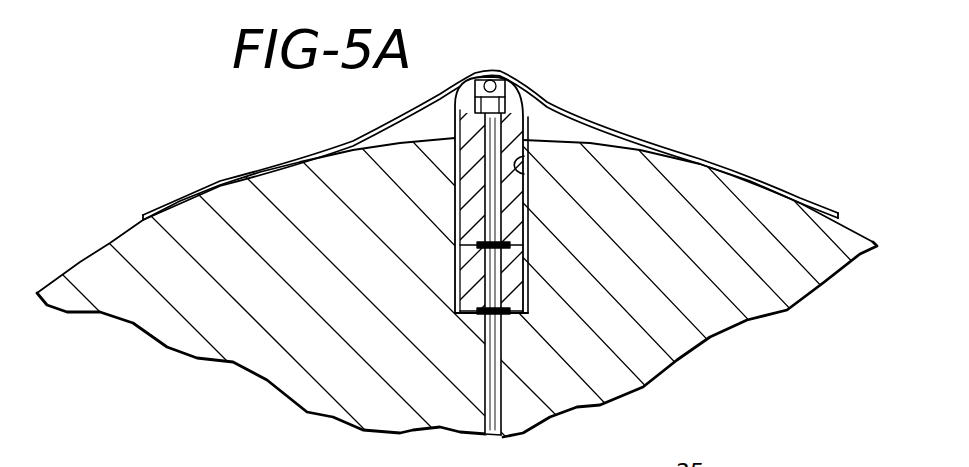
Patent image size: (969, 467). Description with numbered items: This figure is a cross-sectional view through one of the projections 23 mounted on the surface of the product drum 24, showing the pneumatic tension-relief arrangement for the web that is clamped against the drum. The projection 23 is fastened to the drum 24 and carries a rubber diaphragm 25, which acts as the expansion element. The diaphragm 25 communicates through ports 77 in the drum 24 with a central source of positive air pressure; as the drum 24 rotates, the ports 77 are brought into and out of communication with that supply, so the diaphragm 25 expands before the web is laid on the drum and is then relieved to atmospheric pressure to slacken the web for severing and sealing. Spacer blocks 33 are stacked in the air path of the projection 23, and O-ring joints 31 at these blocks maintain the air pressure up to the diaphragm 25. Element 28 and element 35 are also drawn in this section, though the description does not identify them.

The projection 23 is at (527, 119).
The product drum 24 is at (112, 240).
The rubber diaphragm 25 is at (497, 77).
The cover membrane 28 is at (632, 137).
The O-ring joint 31 is at (521, 303).
The spacer block 33 is at (472, 289).
The retaining clip 35 is at (524, 170).
The port 77 is at (492, 408).